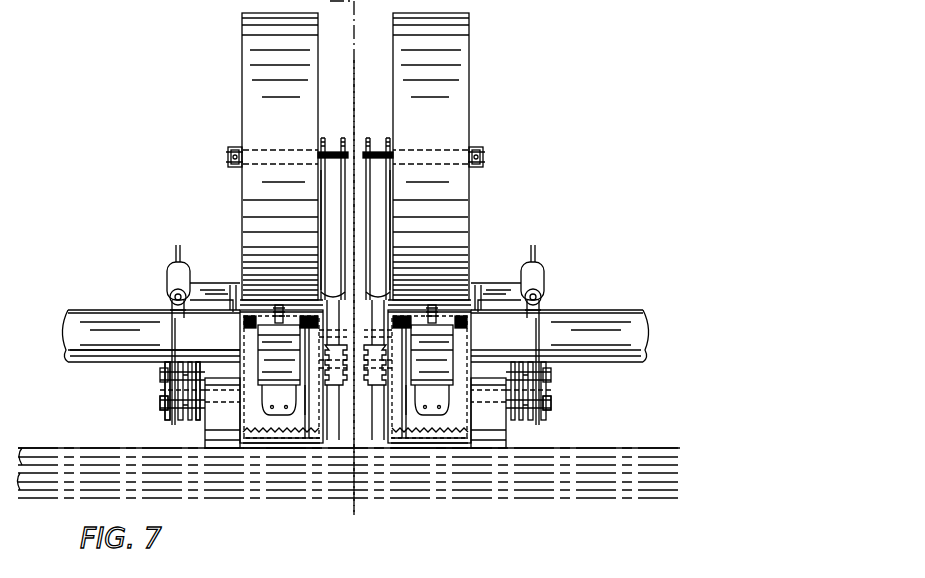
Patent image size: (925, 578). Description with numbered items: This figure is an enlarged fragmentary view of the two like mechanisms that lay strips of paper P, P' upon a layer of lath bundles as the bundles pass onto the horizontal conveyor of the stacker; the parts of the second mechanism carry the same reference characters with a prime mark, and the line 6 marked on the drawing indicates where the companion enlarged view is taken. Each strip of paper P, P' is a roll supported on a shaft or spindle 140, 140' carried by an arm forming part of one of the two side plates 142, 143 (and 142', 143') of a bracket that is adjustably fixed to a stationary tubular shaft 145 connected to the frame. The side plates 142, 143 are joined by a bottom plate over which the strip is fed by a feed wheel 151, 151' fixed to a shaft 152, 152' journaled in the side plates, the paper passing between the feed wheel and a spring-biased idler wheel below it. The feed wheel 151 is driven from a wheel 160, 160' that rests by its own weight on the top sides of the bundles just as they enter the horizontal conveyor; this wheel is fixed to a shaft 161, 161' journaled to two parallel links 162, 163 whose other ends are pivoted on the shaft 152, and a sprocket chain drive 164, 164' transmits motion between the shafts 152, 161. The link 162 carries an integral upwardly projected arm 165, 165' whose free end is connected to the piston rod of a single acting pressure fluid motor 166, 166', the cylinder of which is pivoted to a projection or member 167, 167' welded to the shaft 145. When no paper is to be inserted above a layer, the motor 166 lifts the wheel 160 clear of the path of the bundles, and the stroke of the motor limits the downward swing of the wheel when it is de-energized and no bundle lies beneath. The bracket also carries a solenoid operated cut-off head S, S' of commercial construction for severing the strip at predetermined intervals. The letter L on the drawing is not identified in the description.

The strip of paper P is at (261, 268).
The strip of paper P' is at (452, 268).
The shaft or spindle 140 is at (337, 266).
The shaft or spindle 140' is at (379, 266).
The side plate 143 is at (296, 230).
The side plate 143' is at (419, 230).
The side plate 142 is at (257, 374).
The side plate 142' is at (455, 374).
The cut-off head S is at (276, 300).
The cut-off head S' is at (435, 300).
The feed wheel 151 is at (334, 405).
The feed wheel 151' is at (380, 397).
The stationary tubular shaft 145 is at (105, 306).
The upwardly projected arm 165 is at (154, 338).
The upwardly projected arm 165' is at (560, 336).
The pressure fluid motor 166 is at (161, 281).
The pressure fluid motor 166' is at (556, 281).
The projection or member 167 is at (215, 277).
The projection or member 167' is at (497, 277).
The shaft 152 is at (155, 371).
The shaft 152' is at (555, 371).
The sprocket chain drive 164 is at (155, 392).
The sprocket chain drive 164' is at (555, 407).
The shaft 161 is at (136, 407).
The shaft 161' is at (576, 406).
The link 162 is at (163, 418).
The link 163 is at (197, 420).
The wheel 160 is at (201, 414).
The wheel 160' is at (525, 413).
The rail line L is at (614, 449).
The section line 6— 6 is at (352, 518).